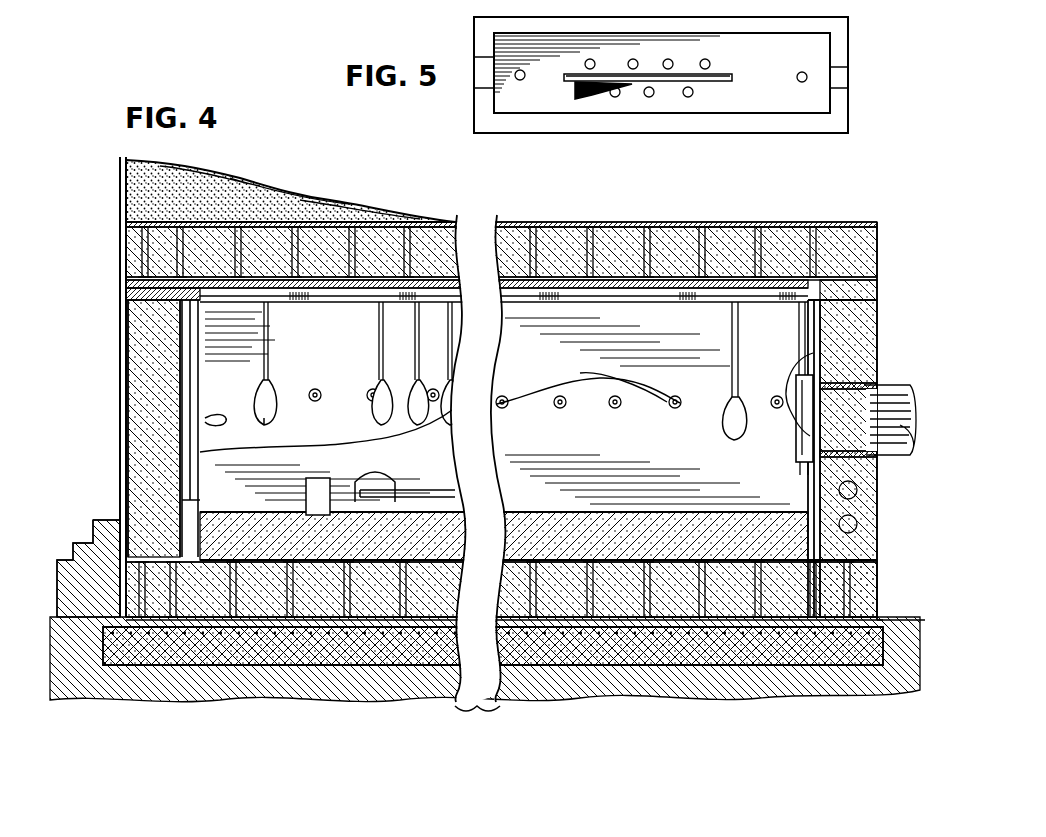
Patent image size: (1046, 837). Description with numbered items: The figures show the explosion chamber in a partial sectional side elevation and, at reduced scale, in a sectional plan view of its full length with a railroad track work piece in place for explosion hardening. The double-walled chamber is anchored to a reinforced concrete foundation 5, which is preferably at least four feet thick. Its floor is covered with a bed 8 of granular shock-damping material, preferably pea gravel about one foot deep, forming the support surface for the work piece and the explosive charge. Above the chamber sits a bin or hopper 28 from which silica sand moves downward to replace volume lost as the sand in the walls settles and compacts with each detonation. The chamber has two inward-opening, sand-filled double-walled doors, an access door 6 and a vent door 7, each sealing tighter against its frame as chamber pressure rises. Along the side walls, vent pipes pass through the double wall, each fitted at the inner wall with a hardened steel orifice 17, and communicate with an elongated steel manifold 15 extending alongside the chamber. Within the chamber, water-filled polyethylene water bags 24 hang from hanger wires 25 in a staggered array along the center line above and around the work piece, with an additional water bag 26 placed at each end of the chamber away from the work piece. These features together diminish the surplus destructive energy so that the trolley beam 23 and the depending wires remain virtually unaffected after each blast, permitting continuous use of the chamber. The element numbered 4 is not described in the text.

In FIG. 4, the side wall 4 is at (870, 298).
In FIG. 4, the reinforced concrete foundation 5 is at (808, 660).
In FIG. 4, the access door 6 is at (205, 419).
In FIG. 4, the vent door 7 is at (812, 343).
In FIG. 4, the bed of granular shock-damping material 8 is at (786, 545).
In FIG. 5, the manifold 15 is at (523, 50).
In FIG. 4, the hardened steel orifice 17 is at (560, 397).
In FIG. 4, the trolley beam 23 is at (517, 290).
In FIG. 4, the water bags 24 is at (200, 453).
In FIG. 4, the hanger wires 25 is at (266, 315).
In FIG. 4, the additional water bag 26 is at (285, 380).
In FIG. 4, the bin or hopper 28 is at (108, 188).